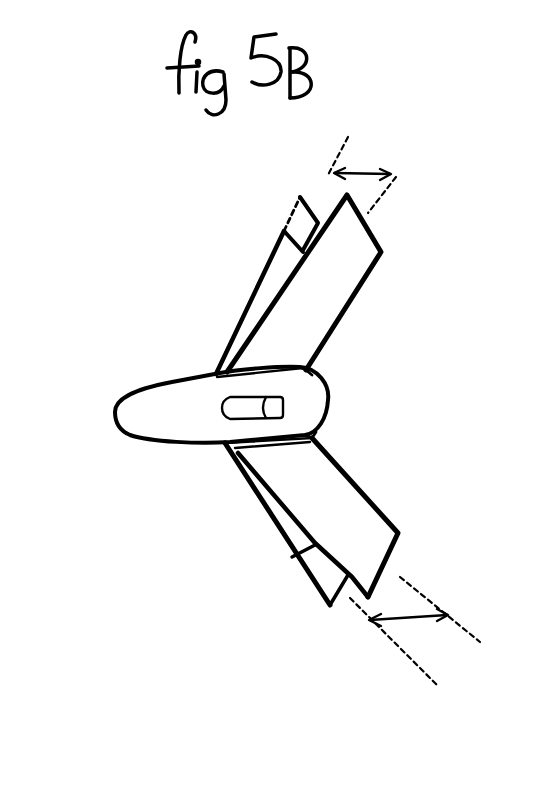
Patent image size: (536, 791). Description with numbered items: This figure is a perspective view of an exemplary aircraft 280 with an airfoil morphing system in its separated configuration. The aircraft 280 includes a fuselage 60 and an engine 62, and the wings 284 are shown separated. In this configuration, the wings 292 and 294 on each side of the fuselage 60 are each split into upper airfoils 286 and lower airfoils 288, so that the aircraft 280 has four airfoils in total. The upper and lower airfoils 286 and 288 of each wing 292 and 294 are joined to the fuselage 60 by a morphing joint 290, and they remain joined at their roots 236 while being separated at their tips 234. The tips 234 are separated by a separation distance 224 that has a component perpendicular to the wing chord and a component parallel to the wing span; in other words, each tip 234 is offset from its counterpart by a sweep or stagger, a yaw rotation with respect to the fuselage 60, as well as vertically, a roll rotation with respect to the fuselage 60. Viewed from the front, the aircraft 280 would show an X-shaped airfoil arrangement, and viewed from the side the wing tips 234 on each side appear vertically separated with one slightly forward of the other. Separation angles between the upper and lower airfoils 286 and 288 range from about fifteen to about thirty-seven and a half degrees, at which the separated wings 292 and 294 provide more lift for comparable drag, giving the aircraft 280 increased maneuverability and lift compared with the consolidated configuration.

The fuselage 60 is at (172, 382).
The engine 62 is at (217, 415).
The separation distance 224 is at (368, 160).
The tips 234 is at (396, 248).
The roots 236 is at (440, 411).
The aircraft 280 is at (162, 640).
The wings 284 is at (380, 463).
The upper airfoils 286 is at (284, 231).
The lower airfoils 288 is at (260, 280).
The morphing joint 290 is at (306, 370).
The wing 292 is at (150, 180).
The wing 294 is at (217, 518).